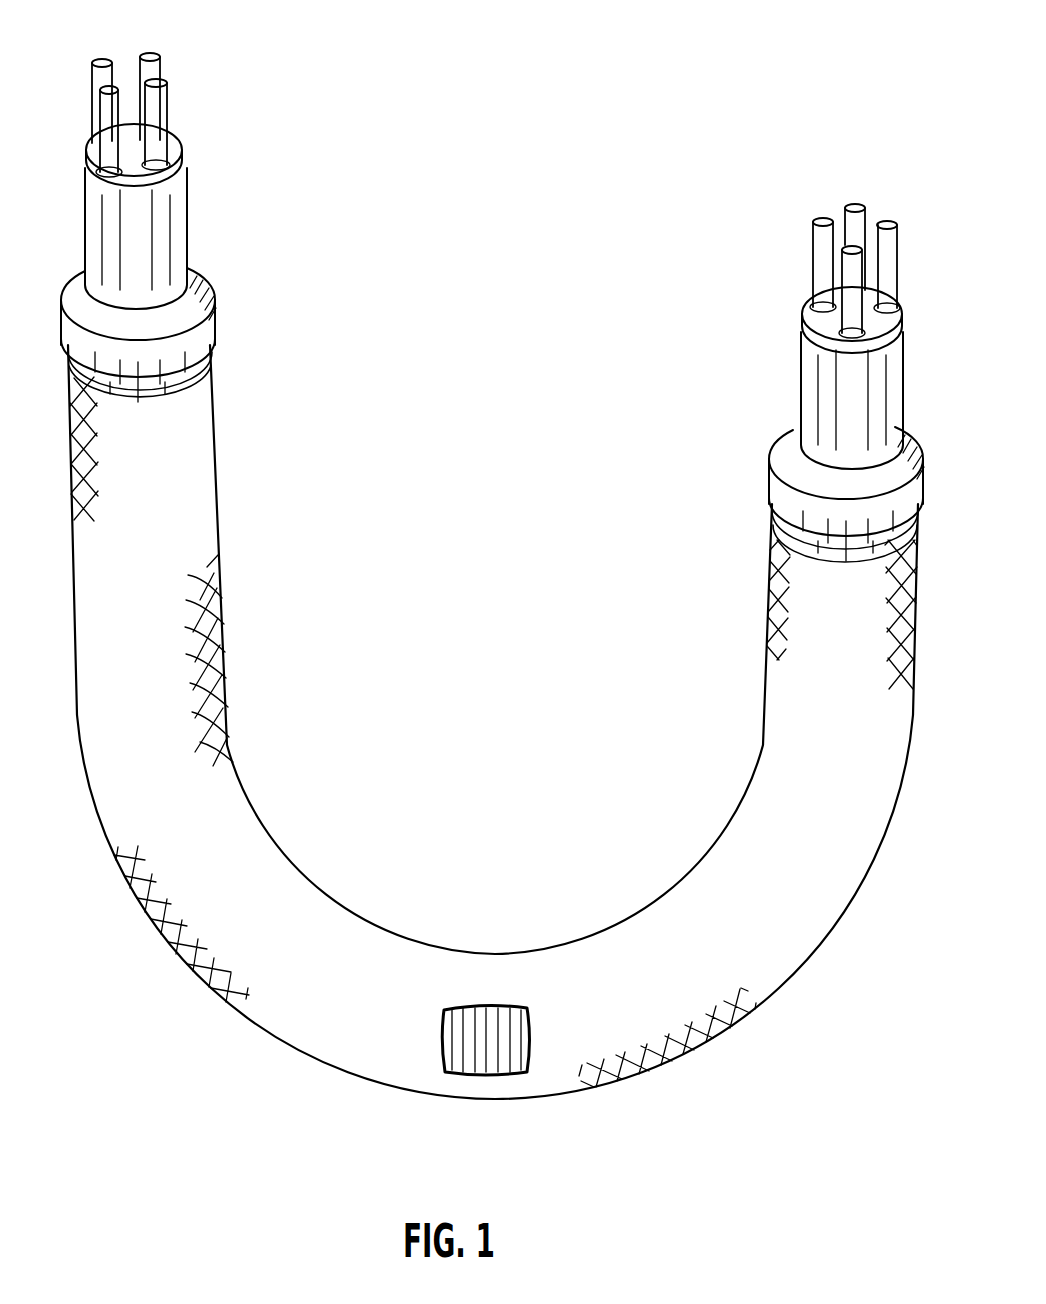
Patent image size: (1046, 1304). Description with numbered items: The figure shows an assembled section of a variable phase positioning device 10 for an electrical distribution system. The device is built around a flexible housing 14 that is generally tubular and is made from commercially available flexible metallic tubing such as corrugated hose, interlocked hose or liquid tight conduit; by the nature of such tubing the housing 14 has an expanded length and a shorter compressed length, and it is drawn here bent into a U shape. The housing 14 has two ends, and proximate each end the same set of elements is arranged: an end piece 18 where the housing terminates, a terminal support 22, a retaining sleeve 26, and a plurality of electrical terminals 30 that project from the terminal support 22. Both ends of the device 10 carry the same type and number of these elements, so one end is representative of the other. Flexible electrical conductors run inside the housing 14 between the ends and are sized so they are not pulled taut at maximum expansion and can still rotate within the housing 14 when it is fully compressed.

The variable phase positioning device 10 is at (497, 608).
The flexible housing 14 is at (488, 1033).
The end piece 18 is at (190, 385).
The terminal support 22 is at (180, 172).
The retaining sleeve 26 is at (177, 277).
The electrical terminals 30 is at (170, 110).